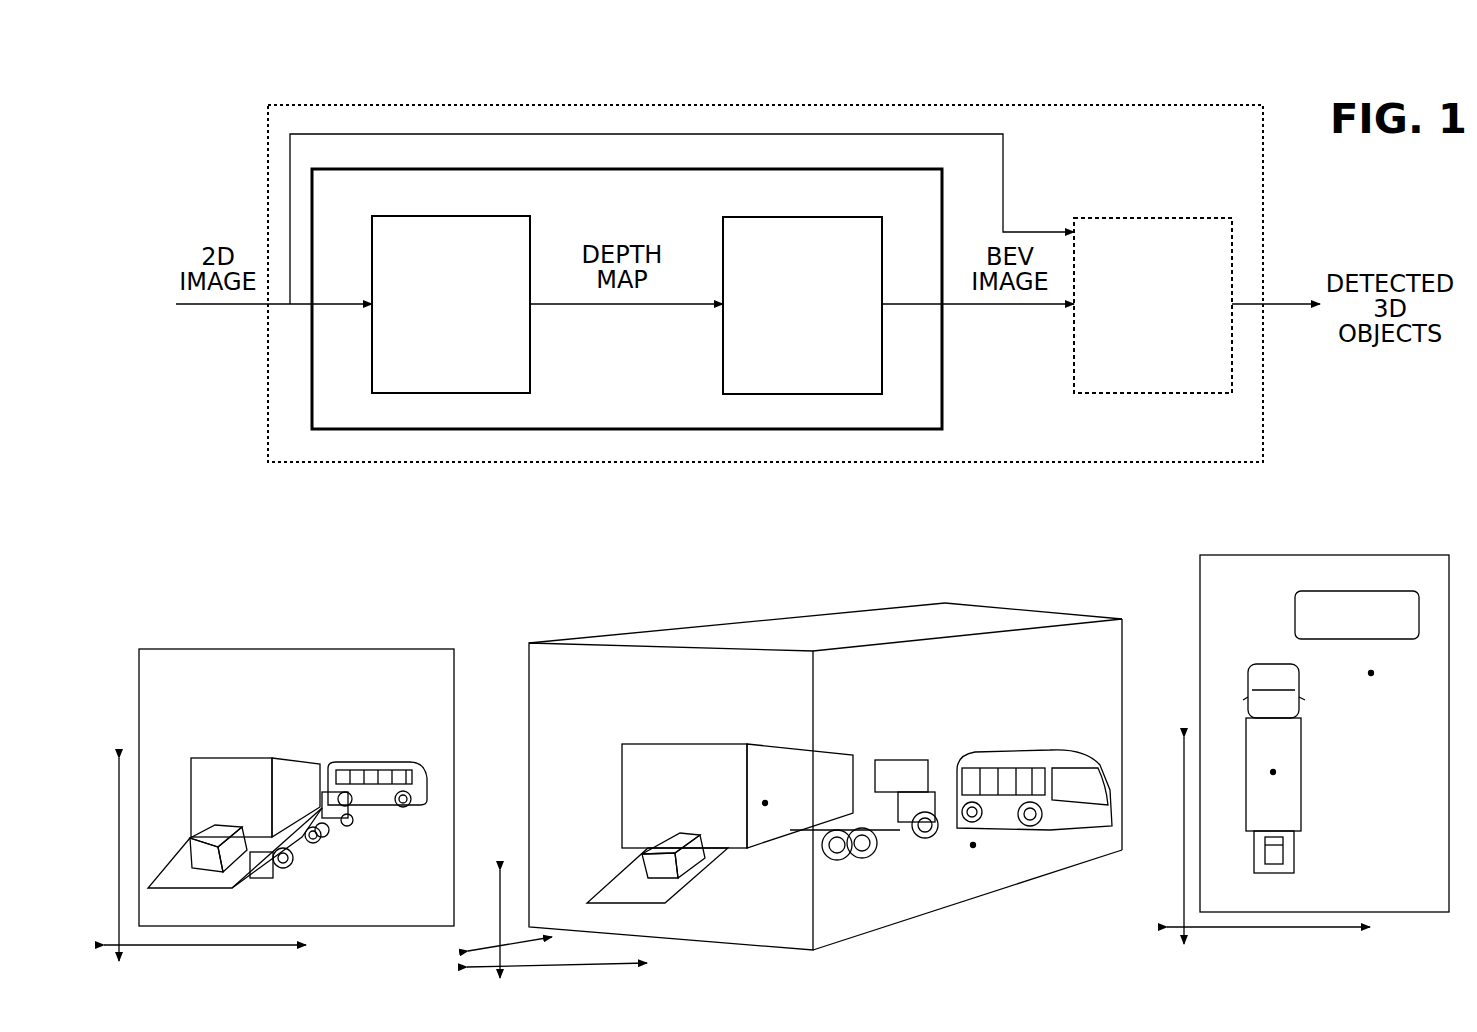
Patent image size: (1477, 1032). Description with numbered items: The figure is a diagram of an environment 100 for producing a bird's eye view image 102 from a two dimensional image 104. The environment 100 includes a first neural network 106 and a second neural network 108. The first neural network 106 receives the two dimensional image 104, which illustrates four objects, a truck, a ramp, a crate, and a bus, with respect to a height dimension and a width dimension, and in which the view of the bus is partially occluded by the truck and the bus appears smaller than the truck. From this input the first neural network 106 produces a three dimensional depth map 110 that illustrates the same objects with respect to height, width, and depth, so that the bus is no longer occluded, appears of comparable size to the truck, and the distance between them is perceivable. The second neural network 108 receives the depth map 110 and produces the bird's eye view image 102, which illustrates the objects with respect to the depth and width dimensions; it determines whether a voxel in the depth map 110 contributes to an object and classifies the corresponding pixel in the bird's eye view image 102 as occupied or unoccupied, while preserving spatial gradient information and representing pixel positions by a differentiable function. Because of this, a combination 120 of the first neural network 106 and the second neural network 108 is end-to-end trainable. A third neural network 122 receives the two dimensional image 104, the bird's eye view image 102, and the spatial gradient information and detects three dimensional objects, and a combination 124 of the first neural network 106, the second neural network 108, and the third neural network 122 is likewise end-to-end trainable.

The environment 100 is at (172, 90).
The bird's eye view image 102 is at (1038, 304).
The two dimensional image 104 is at (215, 304).
The first neural network 106 is at (467, 358).
The second neural network 108 is at (818, 357).
The depth map 110 is at (687, 304).
The combination of the first neural network and the second neural network 120 is at (362, 204).
The third neural network 122 is at (1167, 358).
The combination of the first, second, and third neural networks 124 is at (1208, 148).